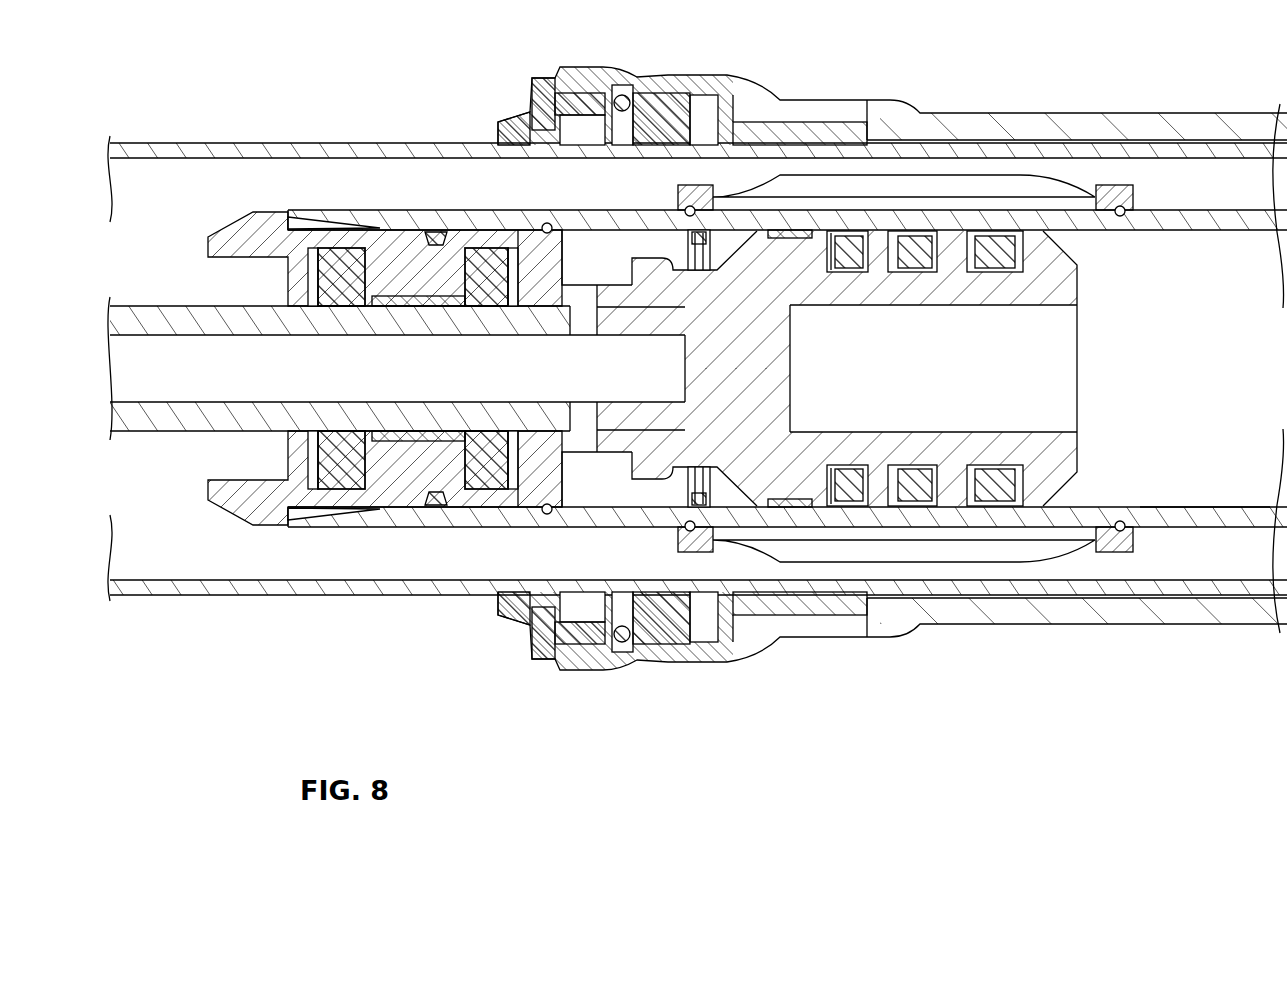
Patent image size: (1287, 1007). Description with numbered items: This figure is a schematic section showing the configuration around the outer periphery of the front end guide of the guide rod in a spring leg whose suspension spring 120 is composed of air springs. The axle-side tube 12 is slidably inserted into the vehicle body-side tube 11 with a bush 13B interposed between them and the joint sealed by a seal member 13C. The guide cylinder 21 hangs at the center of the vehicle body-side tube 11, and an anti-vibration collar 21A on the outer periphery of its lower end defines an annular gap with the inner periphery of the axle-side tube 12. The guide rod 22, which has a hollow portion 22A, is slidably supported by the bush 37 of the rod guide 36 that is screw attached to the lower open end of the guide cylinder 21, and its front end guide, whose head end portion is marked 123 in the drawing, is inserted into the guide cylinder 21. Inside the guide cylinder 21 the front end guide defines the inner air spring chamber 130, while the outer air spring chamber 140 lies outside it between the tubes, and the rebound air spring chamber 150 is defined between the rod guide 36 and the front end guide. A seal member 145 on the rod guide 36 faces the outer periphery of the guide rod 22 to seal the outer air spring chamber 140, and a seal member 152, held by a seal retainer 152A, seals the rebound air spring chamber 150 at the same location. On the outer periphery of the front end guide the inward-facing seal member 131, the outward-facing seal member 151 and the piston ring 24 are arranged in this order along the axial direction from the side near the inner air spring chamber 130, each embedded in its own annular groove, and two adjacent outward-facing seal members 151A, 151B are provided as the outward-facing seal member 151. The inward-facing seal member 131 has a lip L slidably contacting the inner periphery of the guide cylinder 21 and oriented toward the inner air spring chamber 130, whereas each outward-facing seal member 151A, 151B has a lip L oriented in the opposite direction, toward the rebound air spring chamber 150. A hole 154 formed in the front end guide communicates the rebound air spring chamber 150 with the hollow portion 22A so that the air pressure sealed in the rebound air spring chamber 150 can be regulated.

The vehicle body-side tube 11 is at (1130, 112).
The axle-side tube 12 is at (246, 143).
The bush 13B is at (790, 112).
The seal member 13C is at (680, 105).
The guide cylinder 21 is at (1240, 210).
The anti-vibration collar 21A is at (990, 185).
The guide rod 22 is at (162, 306).
The hollow portion 22A is at (155, 380).
The piston ring 24 is at (790, 507).
The rod guide 36 is at (257, 507).
The bush 37 is at (413, 443).
The suspension spring 120 is at (1243, 470).
The piston head end 123 is at (1048, 458).
The inner air spring chamber 130 is at (1205, 465).
The inward-facing seal member 131 is at (993, 490).
The outer air spring chamber 140 is at (200, 540).
The seal member 145 is at (350, 248).
The rebound air spring chamber 150 is at (575, 250).
The outward-facing seal member 151 is at (897, 484).
The outward-facing seal member 151A is at (923, 508).
The outward-facing seal member 151B is at (862, 510).
The seal member 152 is at (487, 490).
The seal retainer 152A is at (552, 470).
The hole 154 is at (588, 290).
The lip L is at (843, 230).